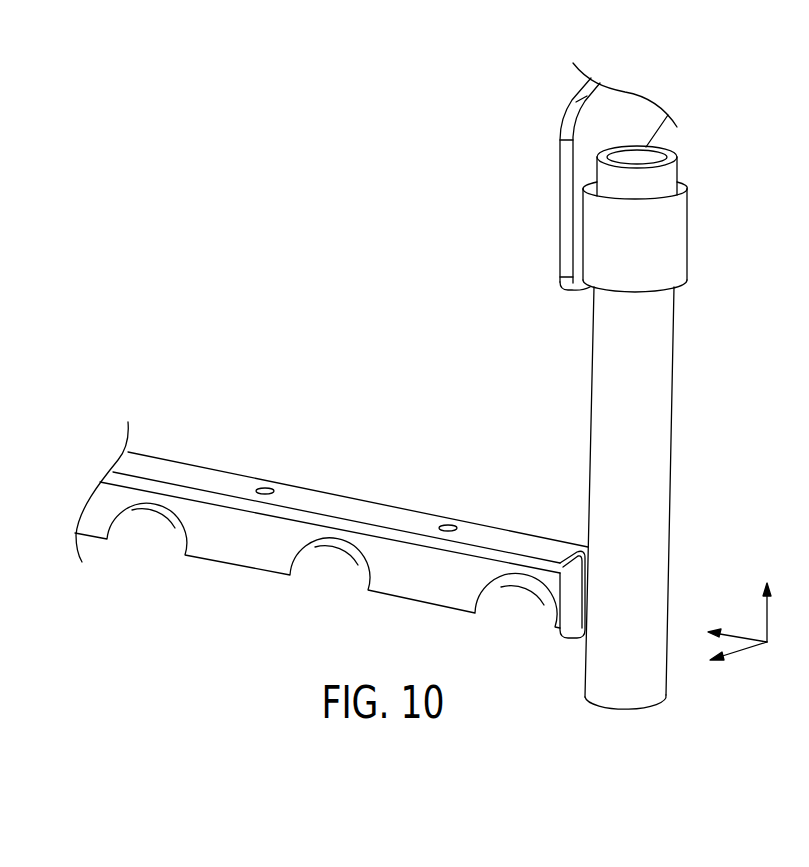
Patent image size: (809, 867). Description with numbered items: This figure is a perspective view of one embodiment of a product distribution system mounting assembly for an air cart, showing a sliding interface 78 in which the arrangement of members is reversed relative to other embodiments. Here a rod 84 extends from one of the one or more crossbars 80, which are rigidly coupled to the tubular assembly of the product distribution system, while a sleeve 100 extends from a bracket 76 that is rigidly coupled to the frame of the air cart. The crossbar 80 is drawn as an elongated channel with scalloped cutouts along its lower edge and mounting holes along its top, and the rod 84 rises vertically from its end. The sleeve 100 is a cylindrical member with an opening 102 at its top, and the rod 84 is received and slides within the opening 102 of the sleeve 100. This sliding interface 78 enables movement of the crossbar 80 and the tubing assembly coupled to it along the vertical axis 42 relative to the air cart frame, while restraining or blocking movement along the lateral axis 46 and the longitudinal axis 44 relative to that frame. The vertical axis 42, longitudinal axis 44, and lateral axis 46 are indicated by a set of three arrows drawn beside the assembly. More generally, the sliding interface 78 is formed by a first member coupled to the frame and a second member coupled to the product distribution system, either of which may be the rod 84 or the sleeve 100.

The vertical axis 42 is at (770, 620).
The longitudinal axis 44 is at (745, 652).
The lateral axis 46 is at (747, 635).
The bracket 76 is at (590, 132).
The sliding interface 78 is at (687, 683).
The crossbar 80 is at (337, 505).
The rod 84 is at (655, 443).
The sleeve 100 is at (672, 235).
The opening 102 is at (680, 183).